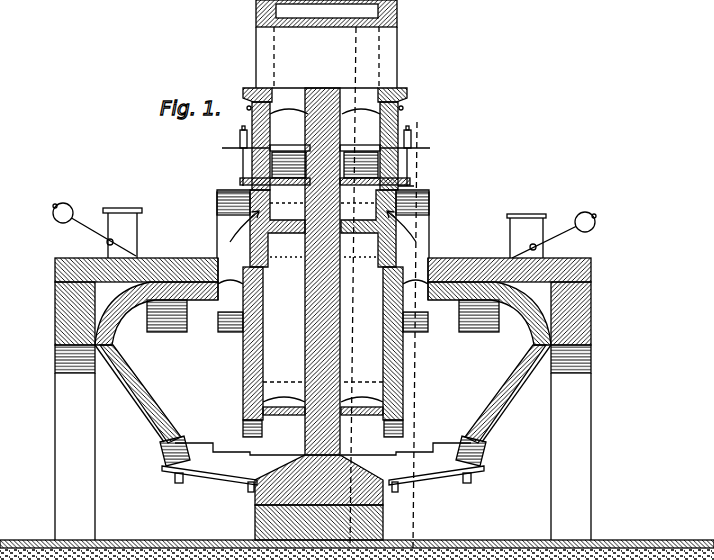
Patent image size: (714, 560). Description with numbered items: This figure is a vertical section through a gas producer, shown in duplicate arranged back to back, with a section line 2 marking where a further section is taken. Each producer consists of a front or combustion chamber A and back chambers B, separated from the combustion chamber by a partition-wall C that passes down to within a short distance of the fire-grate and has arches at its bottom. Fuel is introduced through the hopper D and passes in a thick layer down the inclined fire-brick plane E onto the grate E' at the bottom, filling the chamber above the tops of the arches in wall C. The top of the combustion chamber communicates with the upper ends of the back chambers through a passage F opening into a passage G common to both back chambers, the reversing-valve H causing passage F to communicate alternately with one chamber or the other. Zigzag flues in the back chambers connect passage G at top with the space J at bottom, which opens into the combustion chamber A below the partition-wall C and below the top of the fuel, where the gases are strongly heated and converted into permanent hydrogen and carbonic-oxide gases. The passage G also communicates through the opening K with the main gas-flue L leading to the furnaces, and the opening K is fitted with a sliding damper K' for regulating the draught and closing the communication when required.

The front or combustion chamber A is at (323, 399).
The back chamber B is at (323, 329).
The partition-wall C is at (320, 352).
The hopper D is at (324, 230).
The inclined fire-brick plane E is at (323, 405).
The grate E' is at (323, 478).
The passage F is at (323, 228).
The passage G is at (323, 204).
The reversing-valve H is at (325, 184).
The space J is at (323, 419).
The opening K is at (325, 139).
The sliding damper K' is at (326, 156).
The main gas-flue L is at (326, 44).
The section line 2 is at (419, 335).